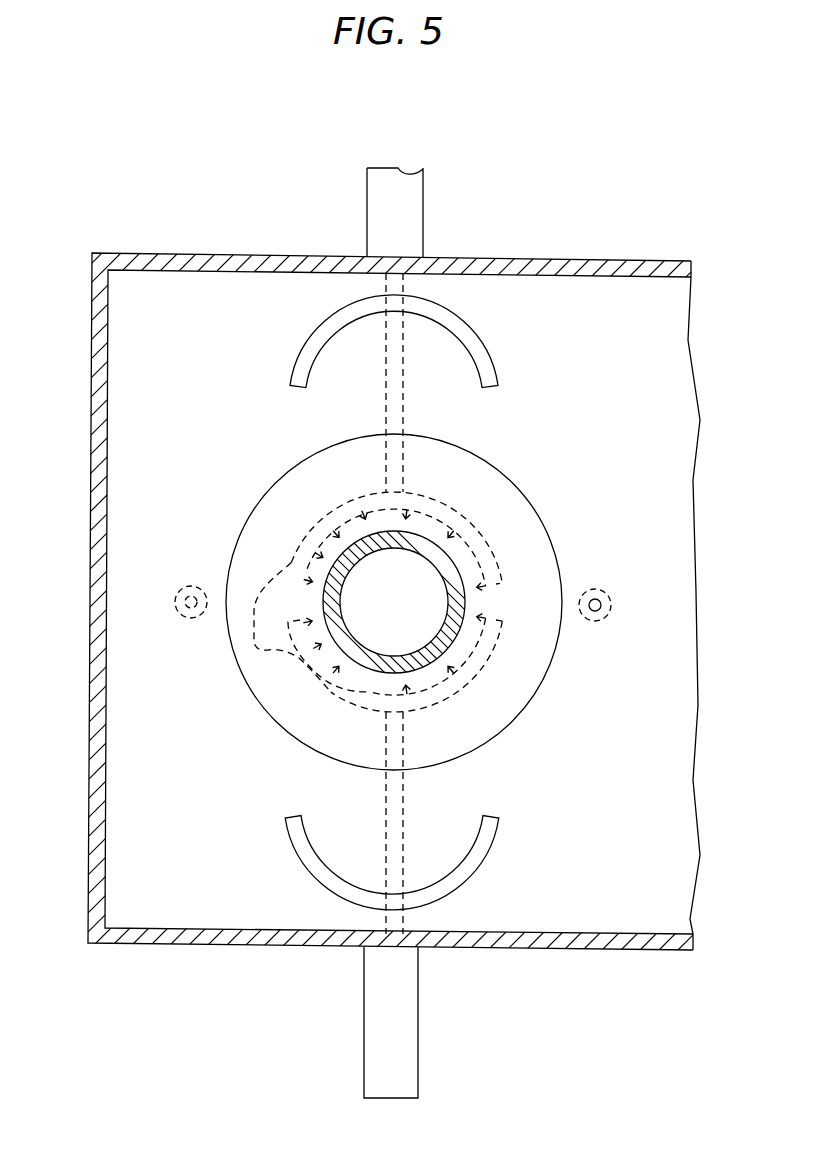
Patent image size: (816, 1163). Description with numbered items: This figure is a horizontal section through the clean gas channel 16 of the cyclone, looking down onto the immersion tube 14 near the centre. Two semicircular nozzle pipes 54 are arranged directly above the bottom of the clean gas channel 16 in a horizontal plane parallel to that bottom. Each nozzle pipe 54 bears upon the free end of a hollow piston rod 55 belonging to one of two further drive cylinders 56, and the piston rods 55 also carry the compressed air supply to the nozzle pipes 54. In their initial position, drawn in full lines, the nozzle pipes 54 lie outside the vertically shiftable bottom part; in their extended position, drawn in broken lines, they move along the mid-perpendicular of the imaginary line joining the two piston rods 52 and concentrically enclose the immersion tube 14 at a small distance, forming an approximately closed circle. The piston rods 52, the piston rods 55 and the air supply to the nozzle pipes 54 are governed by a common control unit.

The immersion tube 14 is at (405, 685).
The clean gas channel 16 is at (128, 536).
The piston rods 52 is at (601, 604).
The semicircular nozzle pipes 54 is at (300, 370).
The piston rods 55 is at (392, 822).
The drive cylinders 56 is at (403, 1026).